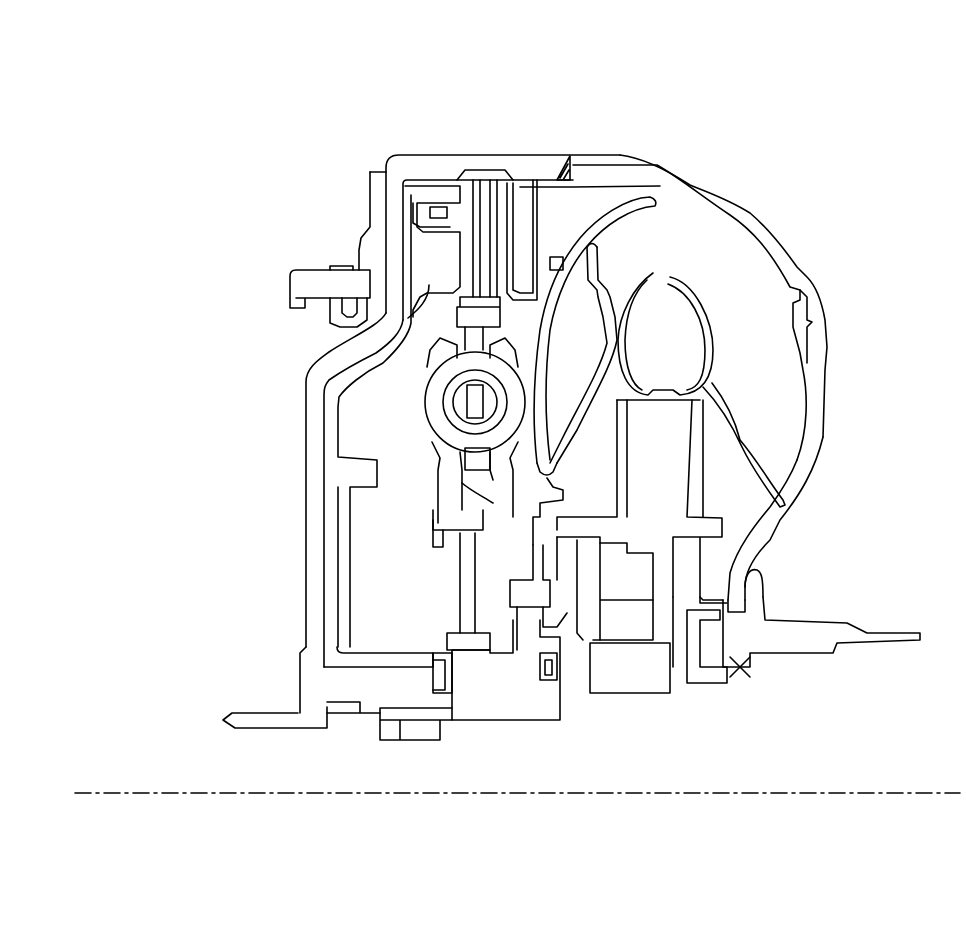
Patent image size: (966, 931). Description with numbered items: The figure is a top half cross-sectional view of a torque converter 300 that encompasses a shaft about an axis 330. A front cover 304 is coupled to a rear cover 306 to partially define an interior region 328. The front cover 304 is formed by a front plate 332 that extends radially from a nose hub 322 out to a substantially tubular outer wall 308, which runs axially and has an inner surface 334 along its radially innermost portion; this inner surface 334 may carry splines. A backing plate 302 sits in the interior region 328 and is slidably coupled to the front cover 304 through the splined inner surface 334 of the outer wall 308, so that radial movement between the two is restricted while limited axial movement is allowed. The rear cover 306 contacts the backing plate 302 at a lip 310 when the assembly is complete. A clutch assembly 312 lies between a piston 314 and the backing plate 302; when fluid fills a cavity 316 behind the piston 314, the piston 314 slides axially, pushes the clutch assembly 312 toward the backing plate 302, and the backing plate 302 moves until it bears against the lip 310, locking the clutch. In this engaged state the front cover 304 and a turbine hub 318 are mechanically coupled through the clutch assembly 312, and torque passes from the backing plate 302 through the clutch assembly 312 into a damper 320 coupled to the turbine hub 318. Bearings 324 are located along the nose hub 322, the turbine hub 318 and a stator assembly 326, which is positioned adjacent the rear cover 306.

The torque converter 300 is at (866, 132).
The backing plate 302 is at (500, 237).
The front cover 304 is at (300, 478).
The rear cover 306 is at (822, 380).
The outer wall 308 is at (421, 165).
The lip 310 is at (556, 168).
The clutch assembly 312 is at (484, 172).
The piston 314 is at (462, 232).
The cavity 316 is at (435, 257).
The turbine hub 318 is at (530, 696).
The damper 320 is at (467, 572).
The nose hub 322 is at (307, 733).
The bearing 324 is at (742, 668).
The stator assembly 326 is at (665, 682).
The interior region 328 is at (384, 423).
The axis 330 is at (125, 787).
The front plate 332 is at (310, 442).
The inner surface 334 is at (437, 203).